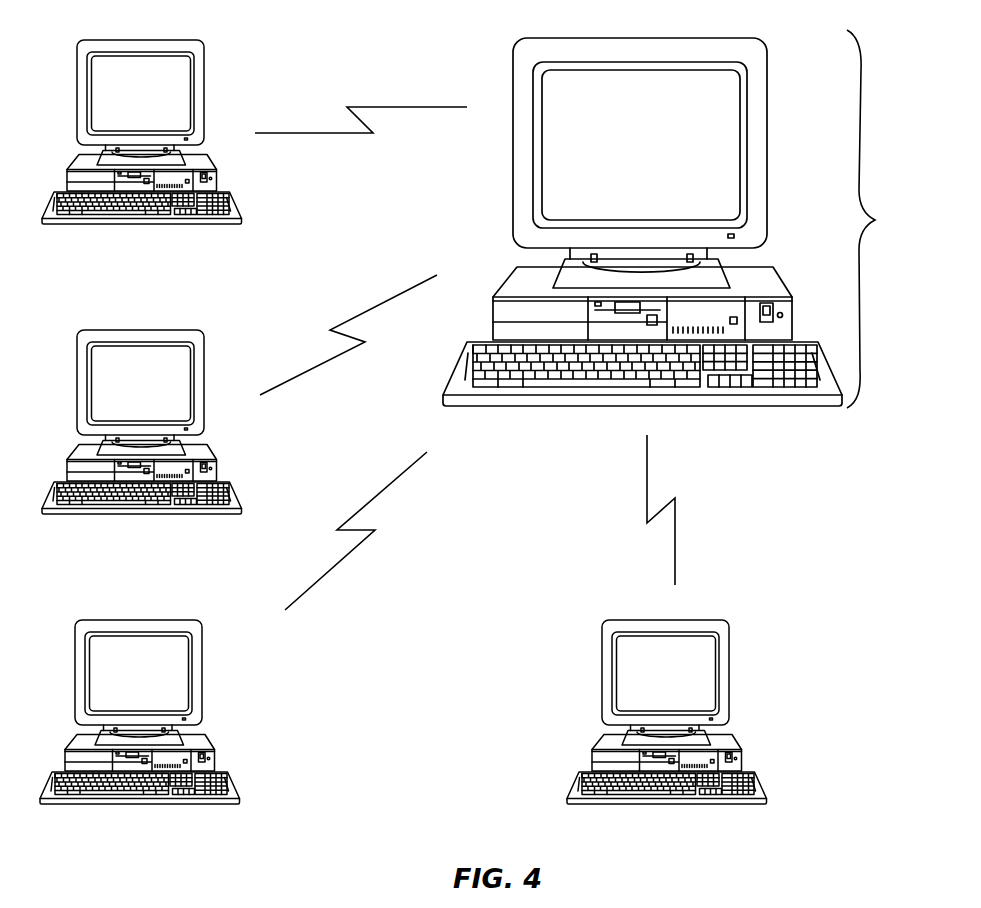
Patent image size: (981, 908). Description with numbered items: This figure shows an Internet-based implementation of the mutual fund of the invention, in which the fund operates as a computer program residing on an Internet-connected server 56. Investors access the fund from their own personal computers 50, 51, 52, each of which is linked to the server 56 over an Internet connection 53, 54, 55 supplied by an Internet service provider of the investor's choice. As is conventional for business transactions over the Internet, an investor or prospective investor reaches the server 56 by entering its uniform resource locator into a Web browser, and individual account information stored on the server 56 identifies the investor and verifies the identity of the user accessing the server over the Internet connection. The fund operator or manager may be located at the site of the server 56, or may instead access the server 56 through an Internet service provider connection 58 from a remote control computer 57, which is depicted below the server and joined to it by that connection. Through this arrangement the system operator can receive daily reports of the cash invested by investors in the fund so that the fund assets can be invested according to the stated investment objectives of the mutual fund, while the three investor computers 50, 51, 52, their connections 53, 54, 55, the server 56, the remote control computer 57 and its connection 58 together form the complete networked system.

The personal computer 50 is at (168, 40).
The personal computer 51 is at (180, 330).
The personal computer 52 is at (167, 620).
The Internet connection 53 is at (387, 107).
The Internet connection 54 is at (365, 342).
The Internet connection 55 is at (375, 530).
The Internet-connected server 56 is at (678, 219).
The remote control computer 57 is at (693, 620).
The Internet service provider connection 58 is at (675, 498).